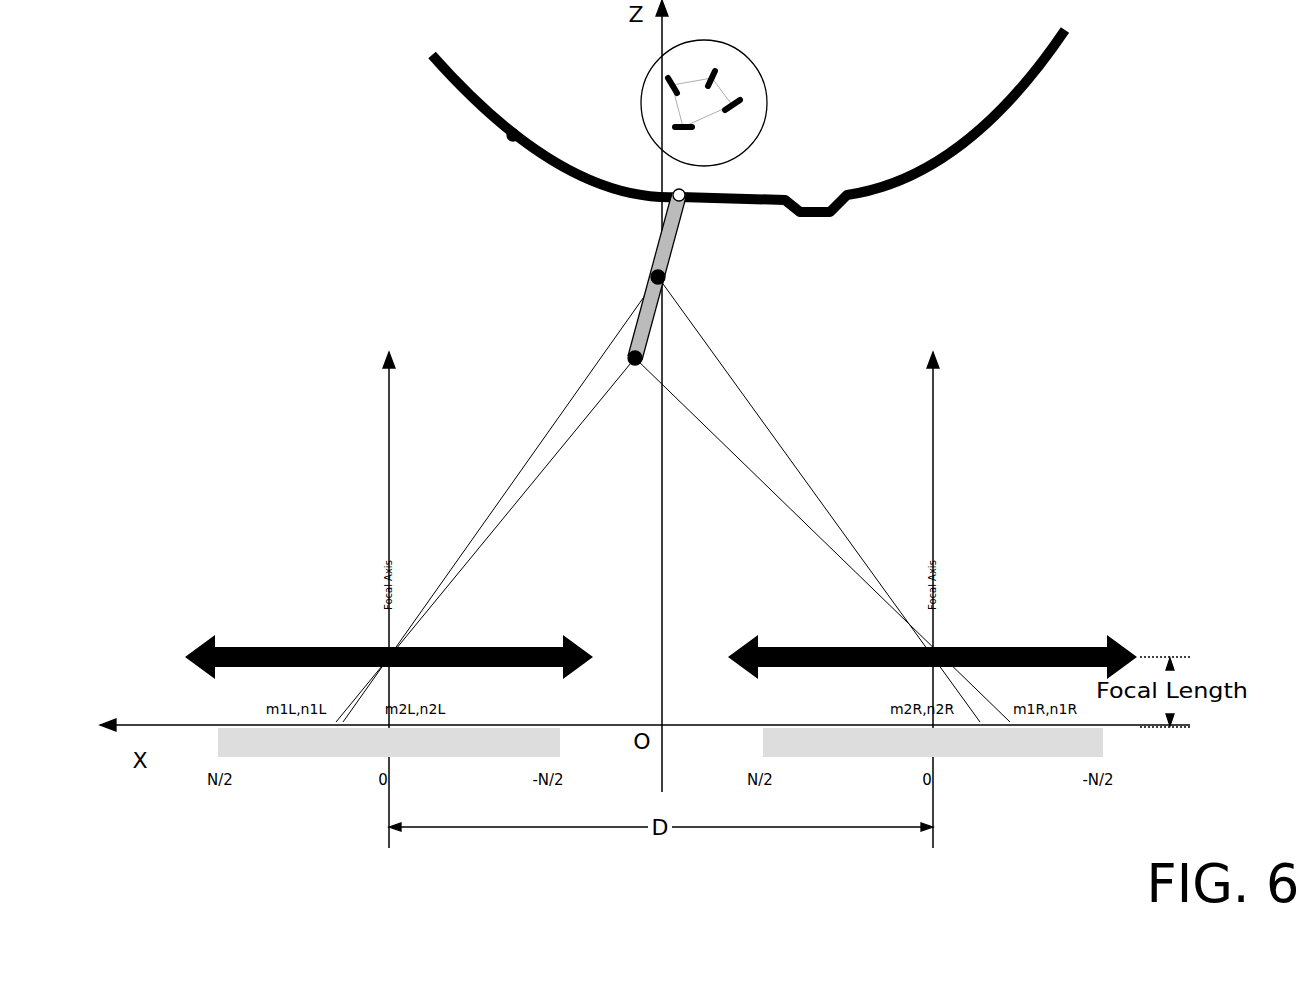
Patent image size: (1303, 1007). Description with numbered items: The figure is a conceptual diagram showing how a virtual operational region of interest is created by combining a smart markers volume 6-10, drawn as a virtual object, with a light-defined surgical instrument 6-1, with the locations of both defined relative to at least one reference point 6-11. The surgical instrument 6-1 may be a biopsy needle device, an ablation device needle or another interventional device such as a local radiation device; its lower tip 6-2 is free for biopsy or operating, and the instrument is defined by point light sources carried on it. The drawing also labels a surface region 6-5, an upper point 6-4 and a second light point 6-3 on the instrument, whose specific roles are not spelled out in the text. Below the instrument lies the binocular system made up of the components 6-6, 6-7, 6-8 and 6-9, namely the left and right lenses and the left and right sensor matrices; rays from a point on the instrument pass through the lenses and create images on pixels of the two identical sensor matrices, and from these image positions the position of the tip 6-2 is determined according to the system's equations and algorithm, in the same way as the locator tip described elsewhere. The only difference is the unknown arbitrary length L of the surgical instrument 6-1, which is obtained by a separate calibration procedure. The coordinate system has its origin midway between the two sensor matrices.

The surgical instrument 6-1 is at (756, 276).
The tip of surgical instrument 6-2 is at (624, 402).
The second LED (LED2) at point P2 6-3 is at (655, 290).
The instrument tip point P 6-4 is at (618, 226).
The patient body surface 6-5 is at (748, 121).
The binocular system component 6-6 is at (932, 645).
The binocular system component 6-7 is at (933, 760).
The binocular system component 6-8 is at (389, 645).
The binocular system component 6-9 is at (389, 760).
The smart markers volume 6-10 is at (773, 103).
The reference point 6-11 is at (461, 178).